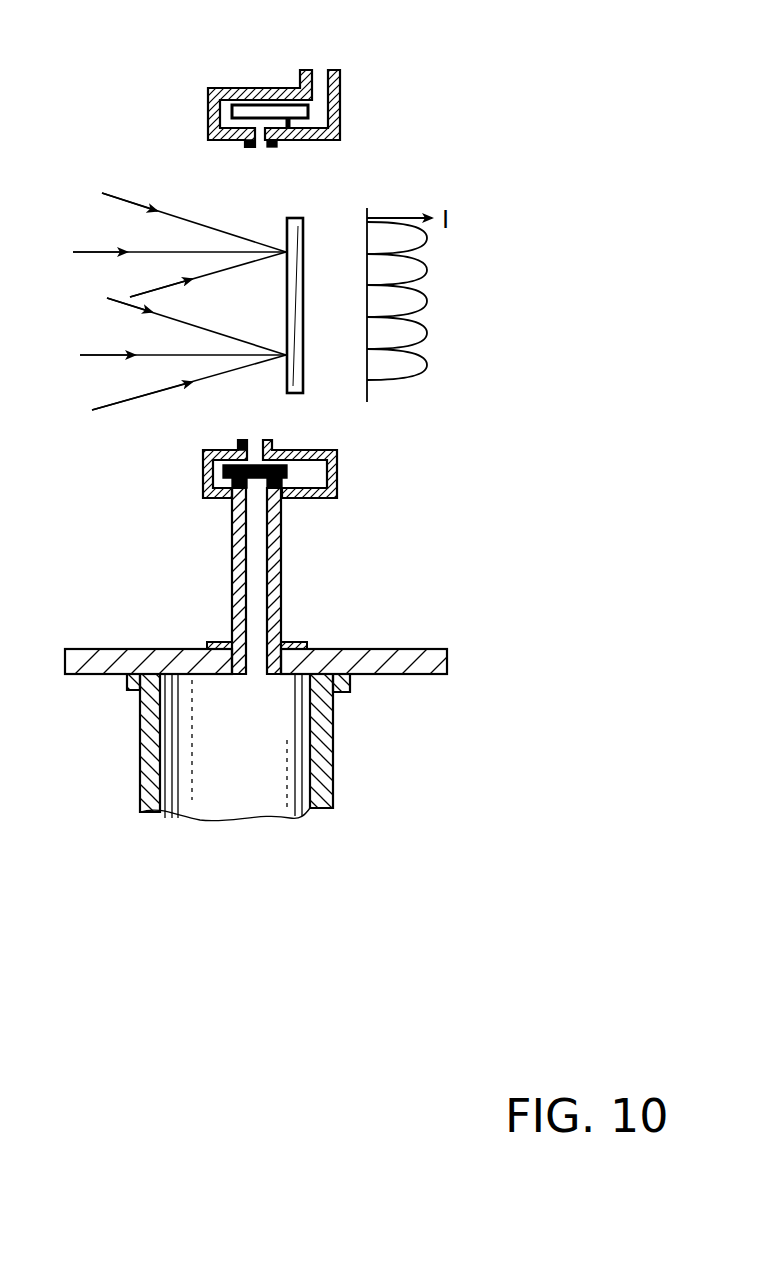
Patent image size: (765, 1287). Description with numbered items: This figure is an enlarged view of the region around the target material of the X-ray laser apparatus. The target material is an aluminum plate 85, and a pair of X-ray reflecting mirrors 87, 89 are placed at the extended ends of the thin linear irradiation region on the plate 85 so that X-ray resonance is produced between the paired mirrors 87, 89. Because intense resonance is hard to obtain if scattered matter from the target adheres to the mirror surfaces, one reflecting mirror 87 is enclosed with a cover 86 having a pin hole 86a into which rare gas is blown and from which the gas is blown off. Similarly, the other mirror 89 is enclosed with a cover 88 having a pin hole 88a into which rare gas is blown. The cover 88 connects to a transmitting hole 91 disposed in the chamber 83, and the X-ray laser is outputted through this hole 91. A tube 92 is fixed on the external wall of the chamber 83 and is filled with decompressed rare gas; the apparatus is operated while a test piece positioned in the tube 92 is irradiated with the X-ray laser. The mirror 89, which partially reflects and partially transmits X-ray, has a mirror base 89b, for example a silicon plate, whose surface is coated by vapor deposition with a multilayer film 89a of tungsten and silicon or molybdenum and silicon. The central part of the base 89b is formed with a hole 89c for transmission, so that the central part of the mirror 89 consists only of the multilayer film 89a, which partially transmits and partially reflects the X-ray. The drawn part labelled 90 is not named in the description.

The chamber 83 is at (128, 648).
The aluminum plate 85 is at (303, 313).
The cover 86 is at (252, 88).
The pin hole 86a is at (258, 140).
The X-ray reflecting mirror 87 is at (290, 140).
The cover 88 is at (337, 470).
The pin hole 88a is at (255, 445).
The reflecting mirror 89 is at (290, 495).
The multilayer film 89a is at (237, 450).
The mirror base 89b is at (205, 490).
The hole 89c is at (247, 482).
The tube 90 is at (283, 567).
The transmitting hole 91 is at (253, 660).
The tube 92 is at (333, 733).